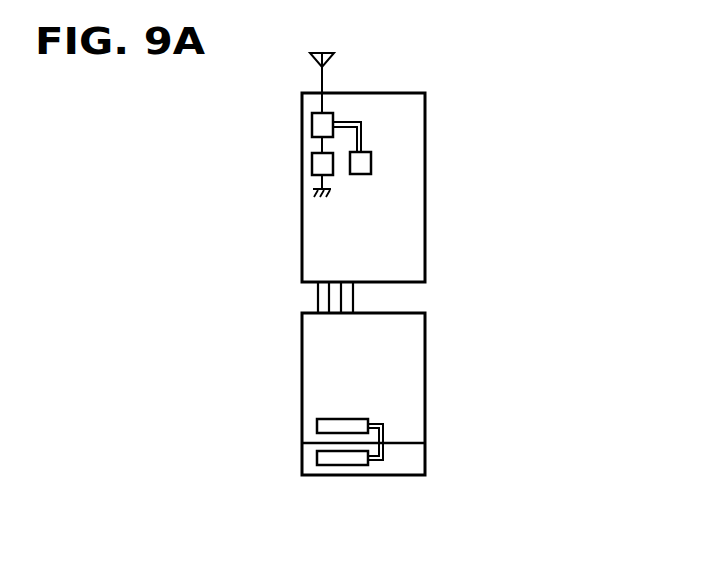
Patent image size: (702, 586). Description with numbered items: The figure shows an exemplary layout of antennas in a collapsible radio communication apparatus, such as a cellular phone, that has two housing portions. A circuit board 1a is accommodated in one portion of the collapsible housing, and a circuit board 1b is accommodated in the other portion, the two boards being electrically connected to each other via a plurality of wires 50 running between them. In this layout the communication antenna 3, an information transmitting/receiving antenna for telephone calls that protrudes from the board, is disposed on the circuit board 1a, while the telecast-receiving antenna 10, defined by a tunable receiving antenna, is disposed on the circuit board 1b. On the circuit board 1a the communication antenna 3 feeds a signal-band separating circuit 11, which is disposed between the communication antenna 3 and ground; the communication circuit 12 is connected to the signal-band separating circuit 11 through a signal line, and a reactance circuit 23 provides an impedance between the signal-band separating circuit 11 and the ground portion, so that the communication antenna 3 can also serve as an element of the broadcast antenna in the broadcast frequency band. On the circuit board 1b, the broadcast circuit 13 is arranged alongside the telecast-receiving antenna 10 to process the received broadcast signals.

The circuit board 1a is at (405, 212).
The circuit board 1b is at (415, 395).
The communication antenna 3 is at (335, 58).
The telecast-receiving antenna 10 is at (337, 464).
The signal-band separating circuit 11 is at (322, 123).
The communication circuit 12 is at (365, 163).
The broadcast circuit 13 is at (322, 428).
The reactance circuit 23 is at (316, 163).
The wires 50 is at (313, 298).